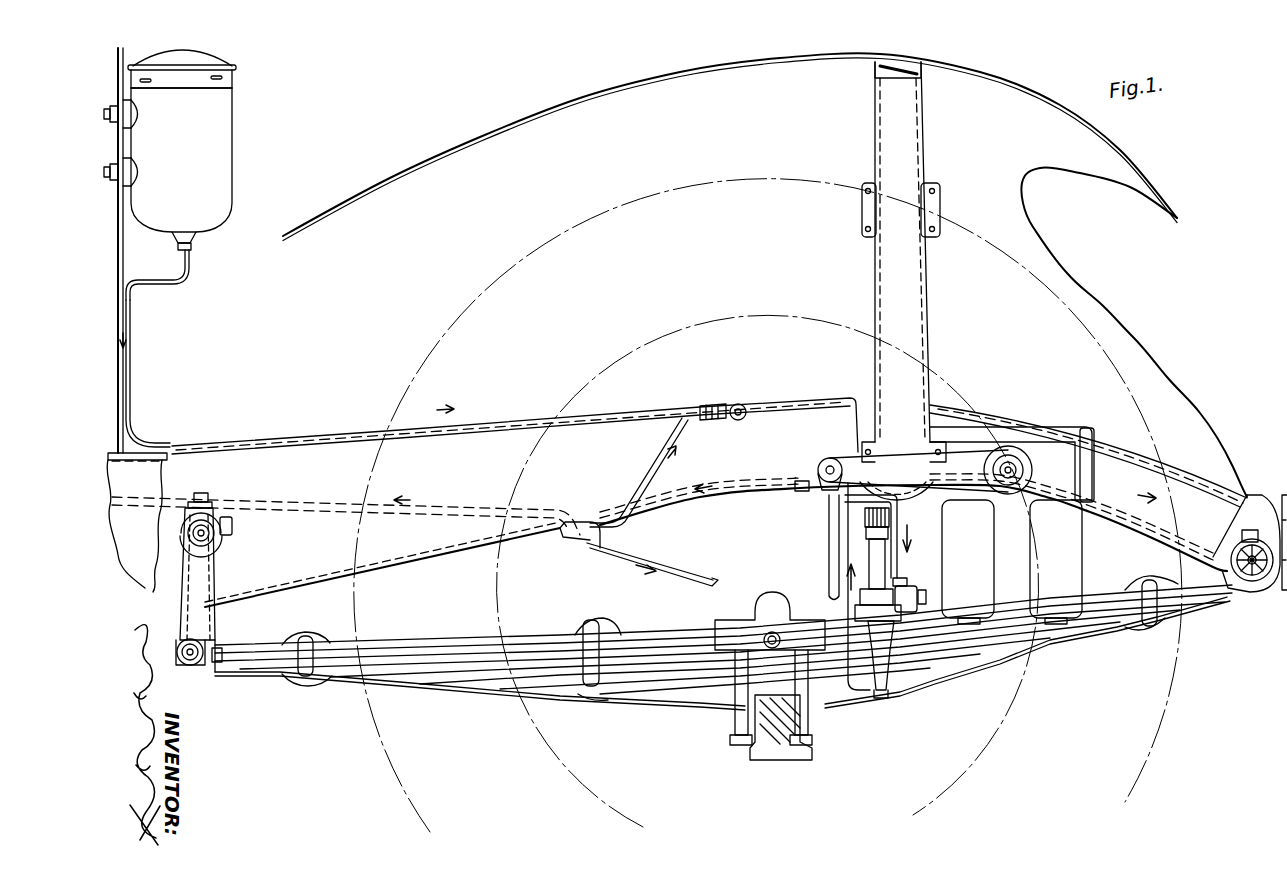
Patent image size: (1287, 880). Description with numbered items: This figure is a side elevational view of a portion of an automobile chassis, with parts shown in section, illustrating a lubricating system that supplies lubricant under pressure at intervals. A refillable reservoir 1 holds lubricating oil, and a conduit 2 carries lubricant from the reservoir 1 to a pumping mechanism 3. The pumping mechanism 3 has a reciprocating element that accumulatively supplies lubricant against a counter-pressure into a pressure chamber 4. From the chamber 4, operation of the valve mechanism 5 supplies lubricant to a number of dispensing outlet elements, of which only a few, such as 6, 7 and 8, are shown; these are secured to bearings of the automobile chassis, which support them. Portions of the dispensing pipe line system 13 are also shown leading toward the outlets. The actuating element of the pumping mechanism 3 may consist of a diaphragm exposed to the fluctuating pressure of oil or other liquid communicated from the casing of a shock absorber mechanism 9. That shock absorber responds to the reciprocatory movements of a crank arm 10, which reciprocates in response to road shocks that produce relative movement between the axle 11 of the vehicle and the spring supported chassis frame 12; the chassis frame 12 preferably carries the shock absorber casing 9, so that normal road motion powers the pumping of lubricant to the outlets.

The refillable reservoir 1 is at (215, 141).
The conduit 2 is at (140, 437).
The pumping mechanism 3 is at (908, 596).
The pressure chamber 4 is at (866, 555).
The valve mechanism 5 is at (882, 655).
The dispensing outlet element 6 is at (1248, 530).
The dispensing outlet element 7 is at (739, 405).
The dispensing outlet element 8 is at (210, 493).
The shock absorber mechanism 9 is at (968, 588).
The lever 10 is at (955, 468).
The axle 11 is at (780, 748).
The spring supported chassis frame 12 is at (1176, 510).
The pipes 13 is at (440, 505).